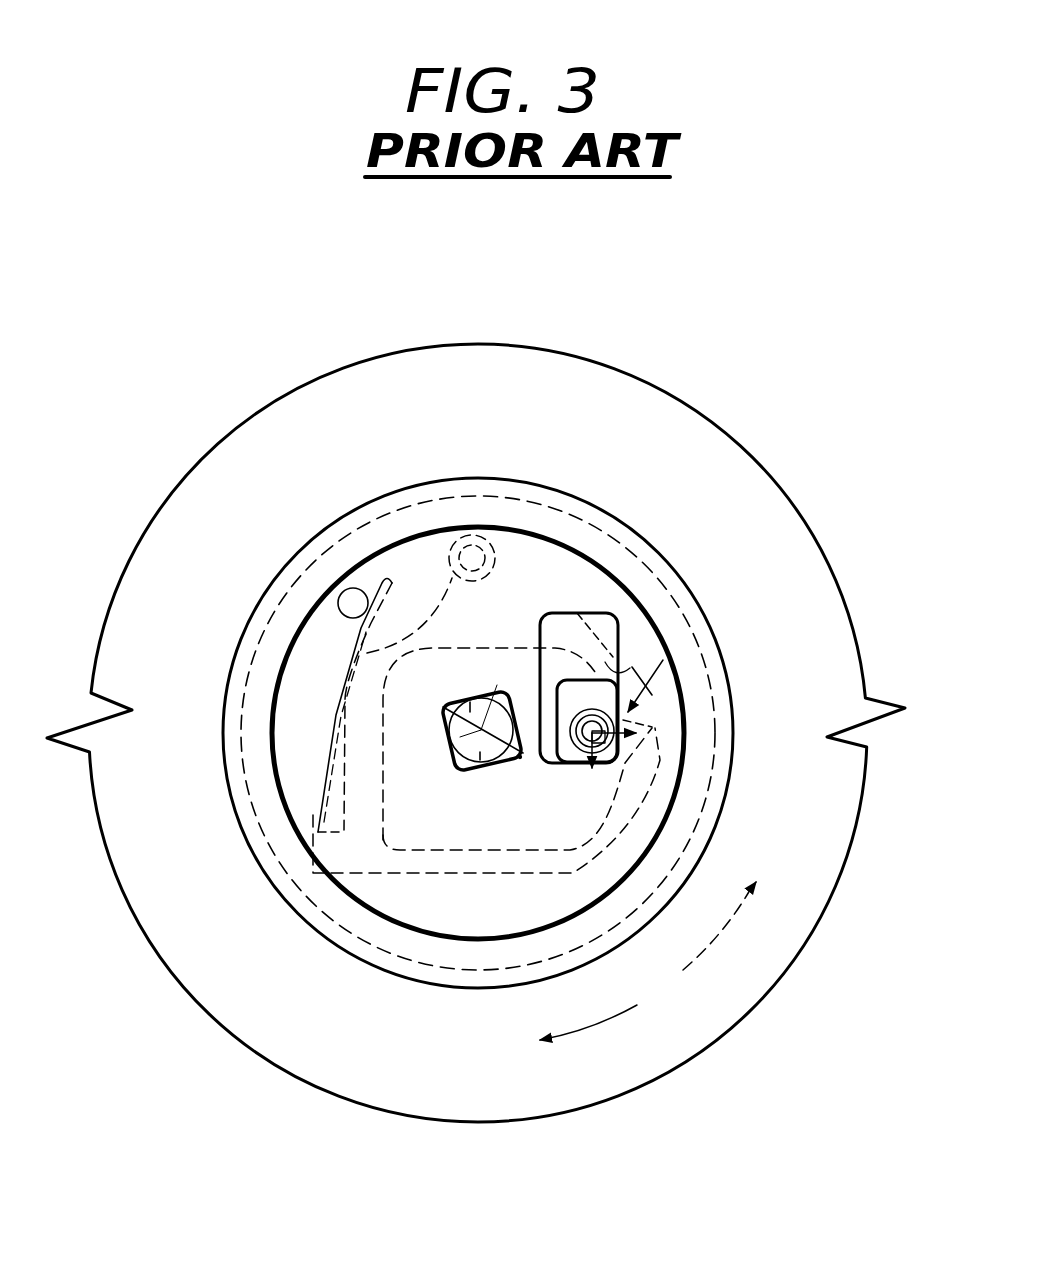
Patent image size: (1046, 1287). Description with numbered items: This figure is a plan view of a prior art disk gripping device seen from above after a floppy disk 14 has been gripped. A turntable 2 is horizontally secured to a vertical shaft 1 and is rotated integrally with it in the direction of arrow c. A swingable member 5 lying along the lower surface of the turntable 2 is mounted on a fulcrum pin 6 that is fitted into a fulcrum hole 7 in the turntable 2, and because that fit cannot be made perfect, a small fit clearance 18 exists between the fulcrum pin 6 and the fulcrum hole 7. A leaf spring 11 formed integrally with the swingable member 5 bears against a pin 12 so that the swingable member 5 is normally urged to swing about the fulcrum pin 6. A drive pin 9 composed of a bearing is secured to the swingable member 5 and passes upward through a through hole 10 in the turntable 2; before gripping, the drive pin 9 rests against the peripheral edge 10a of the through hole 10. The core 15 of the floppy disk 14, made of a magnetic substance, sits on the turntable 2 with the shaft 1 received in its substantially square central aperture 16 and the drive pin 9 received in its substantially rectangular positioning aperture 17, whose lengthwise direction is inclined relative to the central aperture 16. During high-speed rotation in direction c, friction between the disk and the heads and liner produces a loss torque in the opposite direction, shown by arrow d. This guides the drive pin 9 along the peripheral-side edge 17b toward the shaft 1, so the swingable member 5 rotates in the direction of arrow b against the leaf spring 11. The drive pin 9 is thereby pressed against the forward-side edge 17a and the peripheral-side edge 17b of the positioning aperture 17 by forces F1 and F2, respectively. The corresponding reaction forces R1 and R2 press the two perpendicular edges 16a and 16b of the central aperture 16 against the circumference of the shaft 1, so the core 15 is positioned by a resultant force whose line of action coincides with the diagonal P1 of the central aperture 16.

The shaft 1 is at (490, 768).
The turntable 2 is at (602, 612).
The swingable member 5 is at (582, 605).
The fulcrum pin 6 is at (495, 552).
The fulcrum hole 7 is at (452, 545).
The drive pin 9 is at (608, 663).
The through hole 10 is at (603, 768).
The peripheral edge 10a is at (623, 727).
The leaf spring 11 is at (347, 658).
The pin 12 is at (350, 588).
The floppy disk 14 is at (557, 386).
The core 15 is at (308, 607).
The central aperture 16 is at (517, 757).
The edge of central aperture 16a is at (445, 700).
The edge of central aperture 16b is at (455, 770).
The positioning aperture 17 is at (614, 613).
The forward-side edge 17a is at (573, 762).
The peripheral-side edge 17b is at (620, 664).
The fit clearance 18 is at (468, 534).
The reaction force R1 is at (497, 685).
The reaction force R2 is at (460, 737).
The diagonal P1 is at (520, 757).
The vertical force F1 is at (645, 740).
The vertical force F2 is at (624, 714).
The arrow b is at (677, 680).
The arrow c is at (597, 1032).
The arrow d is at (722, 935).